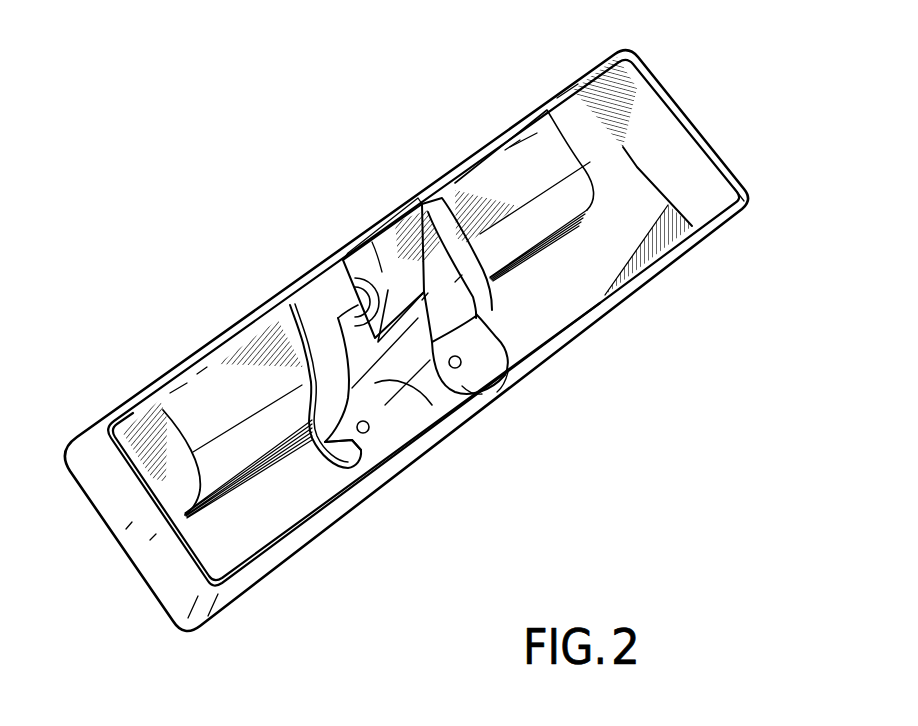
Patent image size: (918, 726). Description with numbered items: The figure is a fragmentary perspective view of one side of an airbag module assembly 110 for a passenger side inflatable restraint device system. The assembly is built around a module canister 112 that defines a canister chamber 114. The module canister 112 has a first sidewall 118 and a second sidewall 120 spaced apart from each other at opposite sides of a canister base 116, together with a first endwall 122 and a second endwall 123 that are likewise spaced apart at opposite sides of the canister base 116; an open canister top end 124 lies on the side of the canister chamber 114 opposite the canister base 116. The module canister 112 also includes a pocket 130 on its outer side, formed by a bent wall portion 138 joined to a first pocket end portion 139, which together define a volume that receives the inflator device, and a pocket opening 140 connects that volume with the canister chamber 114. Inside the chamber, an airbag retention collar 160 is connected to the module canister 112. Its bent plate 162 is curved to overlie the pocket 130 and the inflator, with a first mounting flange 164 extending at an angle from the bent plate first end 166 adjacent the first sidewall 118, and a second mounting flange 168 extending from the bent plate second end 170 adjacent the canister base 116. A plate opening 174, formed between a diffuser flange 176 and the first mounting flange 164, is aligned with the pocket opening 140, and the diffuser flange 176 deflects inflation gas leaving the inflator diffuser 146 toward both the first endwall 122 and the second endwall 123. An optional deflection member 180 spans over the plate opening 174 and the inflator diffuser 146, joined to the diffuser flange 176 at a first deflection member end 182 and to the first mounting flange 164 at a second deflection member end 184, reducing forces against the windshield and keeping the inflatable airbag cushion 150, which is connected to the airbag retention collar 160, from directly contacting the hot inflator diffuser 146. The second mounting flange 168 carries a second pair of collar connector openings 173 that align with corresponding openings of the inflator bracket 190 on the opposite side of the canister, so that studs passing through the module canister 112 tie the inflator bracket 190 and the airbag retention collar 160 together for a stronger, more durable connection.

The airbag module assembly 110 is at (168, 120).
The module canister 112 is at (659, 284).
The canister chamber 114 is at (622, 197).
The canister base 116 is at (526, 314).
The first sidewall 118 is at (596, 60).
The second sidewall 120 is at (292, 548).
The first endwall 122 is at (143, 529).
The second endwall 123 is at (722, 155).
The open canister top end 124 is at (264, 578).
The pocket 130 is at (208, 405).
The bent wall portion 138 is at (503, 180).
The first pocket end portion 139 is at (147, 438).
The pocket opening 140 is at (300, 265).
The inflator diffuser 146 is at (325, 445).
The inflatable airbag cushion 150 is at (506, 345).
The airbag retention collar 160 is at (417, 300).
The bent plate 162 is at (395, 207).
The first mounting flange 164 is at (320, 300).
The bent plate first end 166 is at (325, 285).
The second mounting flange 168 is at (432, 405).
The bent plate second end 170 is at (462, 386).
The second pair of collar connector openings 173 is at (368, 433).
The plate opening 174 is at (292, 318).
The diffuser flange 176 is at (497, 392).
The deflection member 180 is at (340, 262).
The first deflection member end 182 is at (494, 293).
The second deflection member end 184 is at (352, 240).
The inflator bracket 190 is at (392, 204).